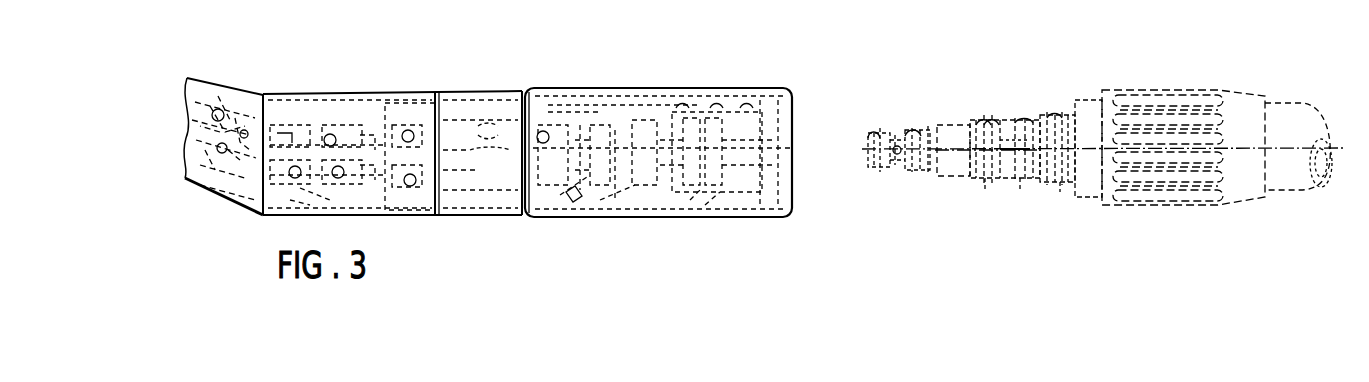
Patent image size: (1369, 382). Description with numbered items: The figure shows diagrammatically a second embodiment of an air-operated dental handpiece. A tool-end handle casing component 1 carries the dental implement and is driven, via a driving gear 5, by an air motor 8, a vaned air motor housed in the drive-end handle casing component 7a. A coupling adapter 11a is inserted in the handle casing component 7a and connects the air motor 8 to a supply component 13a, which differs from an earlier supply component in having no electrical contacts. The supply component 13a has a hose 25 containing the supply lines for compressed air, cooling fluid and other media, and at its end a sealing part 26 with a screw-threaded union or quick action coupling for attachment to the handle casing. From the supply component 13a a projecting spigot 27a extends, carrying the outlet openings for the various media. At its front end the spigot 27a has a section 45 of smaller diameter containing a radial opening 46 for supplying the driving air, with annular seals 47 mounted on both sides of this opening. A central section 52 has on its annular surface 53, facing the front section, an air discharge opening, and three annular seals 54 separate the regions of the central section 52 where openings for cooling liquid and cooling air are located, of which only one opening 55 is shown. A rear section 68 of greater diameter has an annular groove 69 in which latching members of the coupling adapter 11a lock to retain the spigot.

The tool-end handle casing component 1 is at (223, 80).
The driving gear 5 is at (321, 138).
The drive-end handle casing component 7a is at (485, 90).
The air motor 8 is at (500, 130).
The coupling adapter 11a is at (733, 100).
The supply component 13a is at (1187, 84).
The hose 25 is at (1300, 113).
The sealing part 26 is at (1225, 95).
The projecting spigot 27a is at (940, 195).
The front section of smaller diameter 45 is at (923, 120).
The radial opening 46 is at (898, 146).
The annular seals 47 is at (920, 171).
The central section 52 is at (992, 108).
The annular surface 53 is at (936, 128).
The annular seals 54 is at (1022, 173).
The opening 55 is at (1011, 147).
The rear section of greater diameter 68 is at (1061, 112).
The annular groove 69 is at (1060, 178).